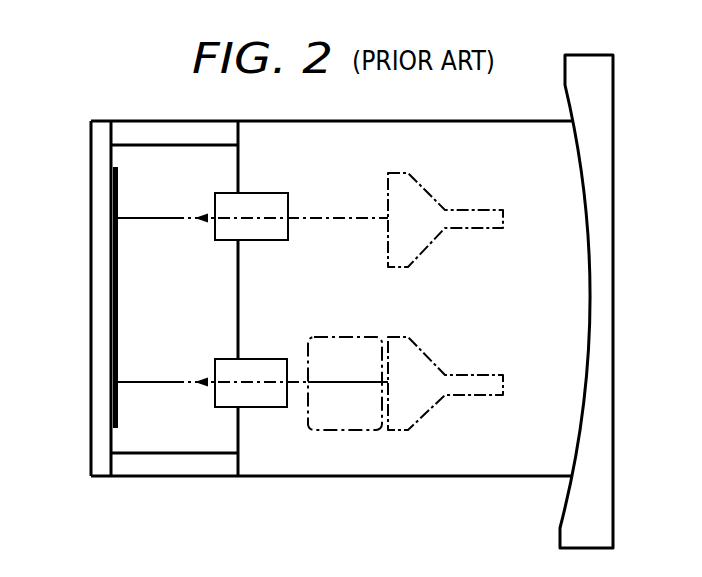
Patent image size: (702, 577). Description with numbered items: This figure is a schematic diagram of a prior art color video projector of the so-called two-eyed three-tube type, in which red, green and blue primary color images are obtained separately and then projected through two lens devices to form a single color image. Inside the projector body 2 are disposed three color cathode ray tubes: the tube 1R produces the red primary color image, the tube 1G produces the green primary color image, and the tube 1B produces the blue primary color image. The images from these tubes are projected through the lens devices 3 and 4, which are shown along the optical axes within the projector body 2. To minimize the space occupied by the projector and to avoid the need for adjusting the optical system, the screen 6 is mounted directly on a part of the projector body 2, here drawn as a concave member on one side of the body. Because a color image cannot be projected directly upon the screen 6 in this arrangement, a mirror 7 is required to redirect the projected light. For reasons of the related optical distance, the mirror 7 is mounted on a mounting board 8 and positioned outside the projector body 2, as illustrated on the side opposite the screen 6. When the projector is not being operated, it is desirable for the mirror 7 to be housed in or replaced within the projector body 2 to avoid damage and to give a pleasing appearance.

The projector body 2 is at (377, 477).
The mounting board 8 is at (96, 277).
The mirror 7 is at (115, 295).
The lens device 3 is at (265, 241).
The lens device 4 is at (265, 408).
The color cathode ray tube 1B is at (330, 431).
The color cathode ray tube 1G is at (470, 229).
The color cathode ray tube 1R is at (462, 396).
The screen 6 is at (584, 382).